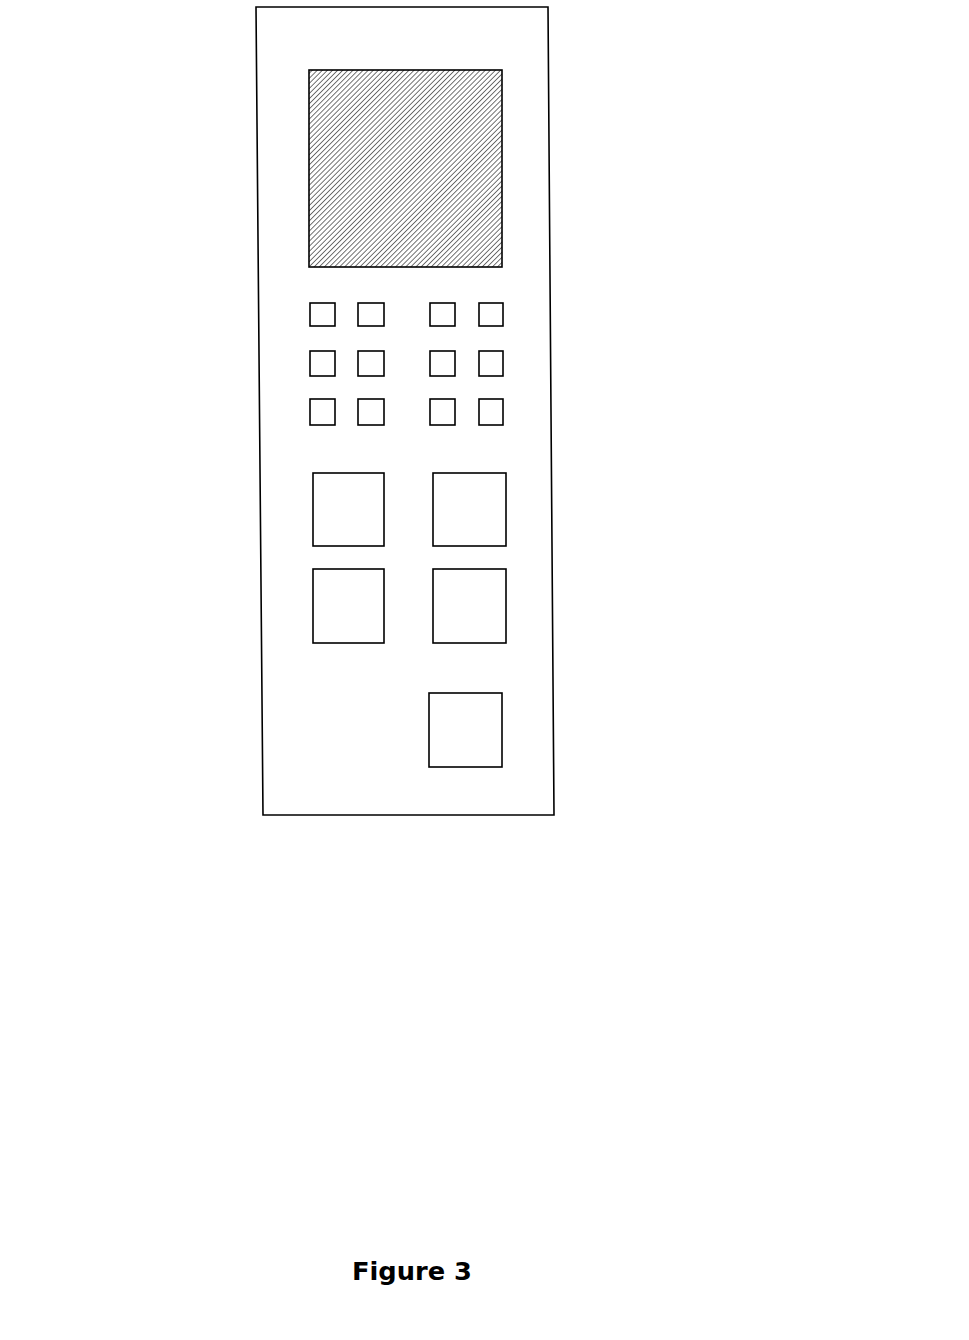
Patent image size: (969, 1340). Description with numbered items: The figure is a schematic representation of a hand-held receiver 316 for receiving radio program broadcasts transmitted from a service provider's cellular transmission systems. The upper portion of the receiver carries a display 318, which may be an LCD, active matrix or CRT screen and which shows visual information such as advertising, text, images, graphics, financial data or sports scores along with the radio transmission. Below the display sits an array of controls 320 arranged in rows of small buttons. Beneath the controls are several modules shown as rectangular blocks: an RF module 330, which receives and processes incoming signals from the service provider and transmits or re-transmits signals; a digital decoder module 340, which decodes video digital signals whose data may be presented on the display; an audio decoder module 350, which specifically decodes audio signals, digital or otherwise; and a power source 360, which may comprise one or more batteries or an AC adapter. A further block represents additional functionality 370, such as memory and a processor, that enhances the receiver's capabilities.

The hand-held receiver 316 is at (228, 366).
The display 318 is at (470, 151).
The array of controls 320 is at (519, 415).
The RF module 330 is at (292, 526).
The digital decoder module 340 is at (523, 507).
The audio decoder module 350 is at (293, 626).
The power source 360 is at (521, 604).
The additional functionality 370 is at (521, 746).